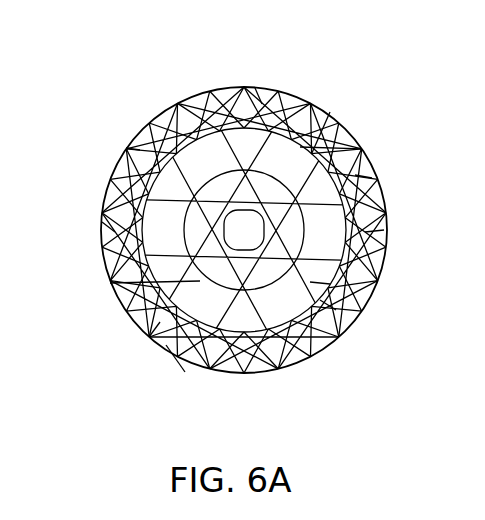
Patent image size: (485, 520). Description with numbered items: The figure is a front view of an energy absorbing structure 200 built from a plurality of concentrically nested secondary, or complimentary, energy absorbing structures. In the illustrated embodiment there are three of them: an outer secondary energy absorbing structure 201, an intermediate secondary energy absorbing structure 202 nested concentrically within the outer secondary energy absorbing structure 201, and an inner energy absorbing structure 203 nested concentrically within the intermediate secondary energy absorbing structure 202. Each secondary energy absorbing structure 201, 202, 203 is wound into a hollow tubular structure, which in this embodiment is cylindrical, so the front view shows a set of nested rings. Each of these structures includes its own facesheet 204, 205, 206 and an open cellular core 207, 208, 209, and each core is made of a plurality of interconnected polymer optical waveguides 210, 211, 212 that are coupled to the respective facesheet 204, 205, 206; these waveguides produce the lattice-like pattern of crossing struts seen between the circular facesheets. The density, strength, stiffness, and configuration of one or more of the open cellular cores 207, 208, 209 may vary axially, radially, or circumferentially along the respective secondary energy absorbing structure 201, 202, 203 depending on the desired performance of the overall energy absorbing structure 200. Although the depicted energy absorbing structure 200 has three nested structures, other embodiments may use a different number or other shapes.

The energy absorbing structure 200 is at (380, 78).
The outer secondary energy absorbing structure 201 is at (327, 306).
The intermediate secondary energy absorbing structure 202 is at (356, 148).
The inner energy absorbing structure 203 is at (384, 230).
The facesheet 204 is at (154, 328).
The facesheet 205 is at (259, 100).
The facesheet 206 is at (372, 178).
The open cellular core 207 is at (106, 228).
The open cellular core 208 is at (322, 283).
The open cellular core 209 is at (133, 142).
The polymer optical waveguides 210 is at (170, 352).
The polymer optical waveguides 211 is at (322, 113).
The polymer optical waveguides 212 is at (112, 283).